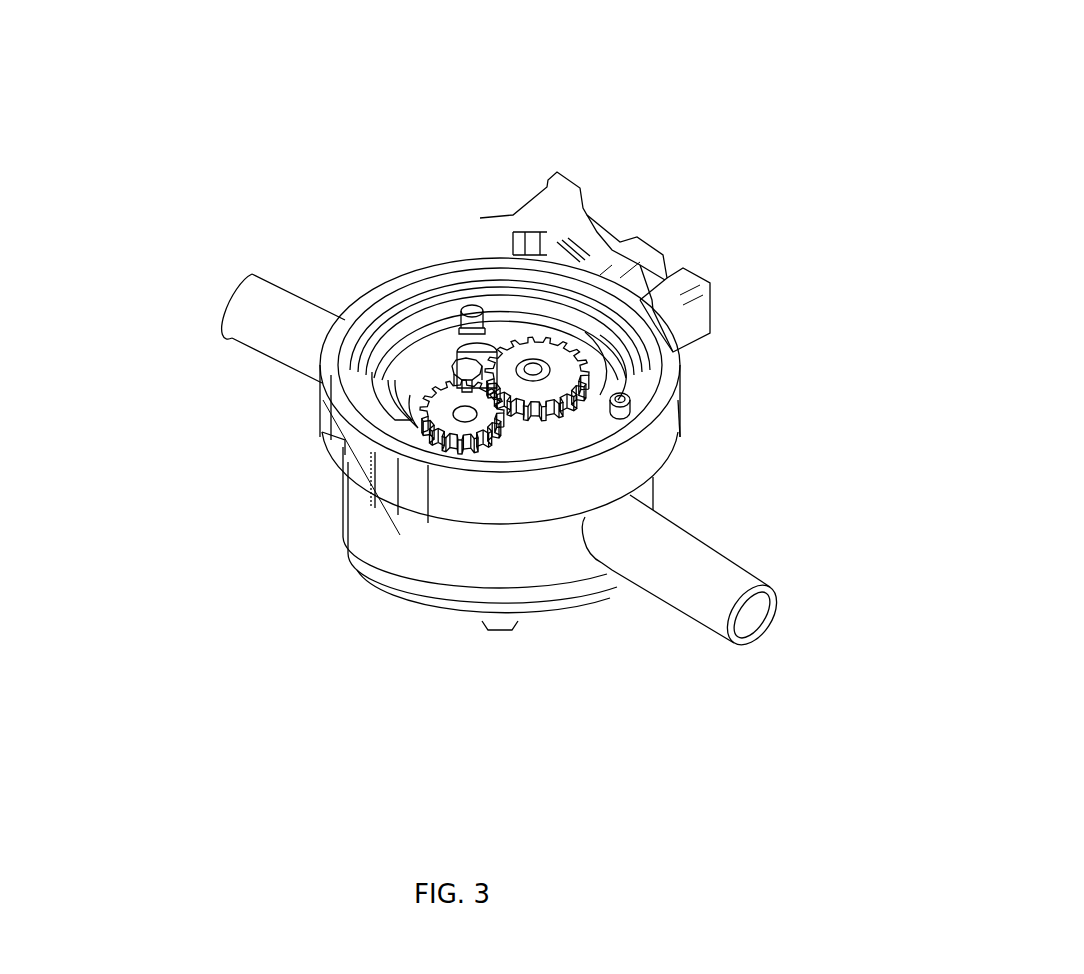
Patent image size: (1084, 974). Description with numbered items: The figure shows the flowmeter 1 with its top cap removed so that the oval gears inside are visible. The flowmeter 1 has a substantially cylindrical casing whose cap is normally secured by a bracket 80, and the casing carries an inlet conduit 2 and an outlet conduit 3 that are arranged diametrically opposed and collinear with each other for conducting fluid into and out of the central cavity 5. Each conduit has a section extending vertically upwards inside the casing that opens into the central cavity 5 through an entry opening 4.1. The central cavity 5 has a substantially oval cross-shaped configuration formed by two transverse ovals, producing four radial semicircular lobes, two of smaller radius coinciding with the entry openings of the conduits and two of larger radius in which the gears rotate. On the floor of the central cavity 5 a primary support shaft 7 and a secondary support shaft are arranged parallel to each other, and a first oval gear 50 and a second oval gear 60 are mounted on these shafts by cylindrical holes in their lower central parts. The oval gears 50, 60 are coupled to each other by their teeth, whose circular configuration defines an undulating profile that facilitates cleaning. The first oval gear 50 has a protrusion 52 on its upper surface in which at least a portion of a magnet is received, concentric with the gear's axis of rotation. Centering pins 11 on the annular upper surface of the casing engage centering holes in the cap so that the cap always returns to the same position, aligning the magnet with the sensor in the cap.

The flowmeter 1 is at (435, 548).
The inlet conduit 2 is at (298, 353).
The outlet conduit 3 is at (677, 568).
The entry opening 4.1 is at (772, 448).
The central cavity 5 is at (465, 368).
The primary support shaft 7 is at (483, 417).
The centering pins 11 is at (630, 397).
The first oval gear 50 is at (560, 350).
The protrusion 52 is at (528, 354).
The second oval gear 60 is at (437, 392).
The bracket 80 is at (620, 256).